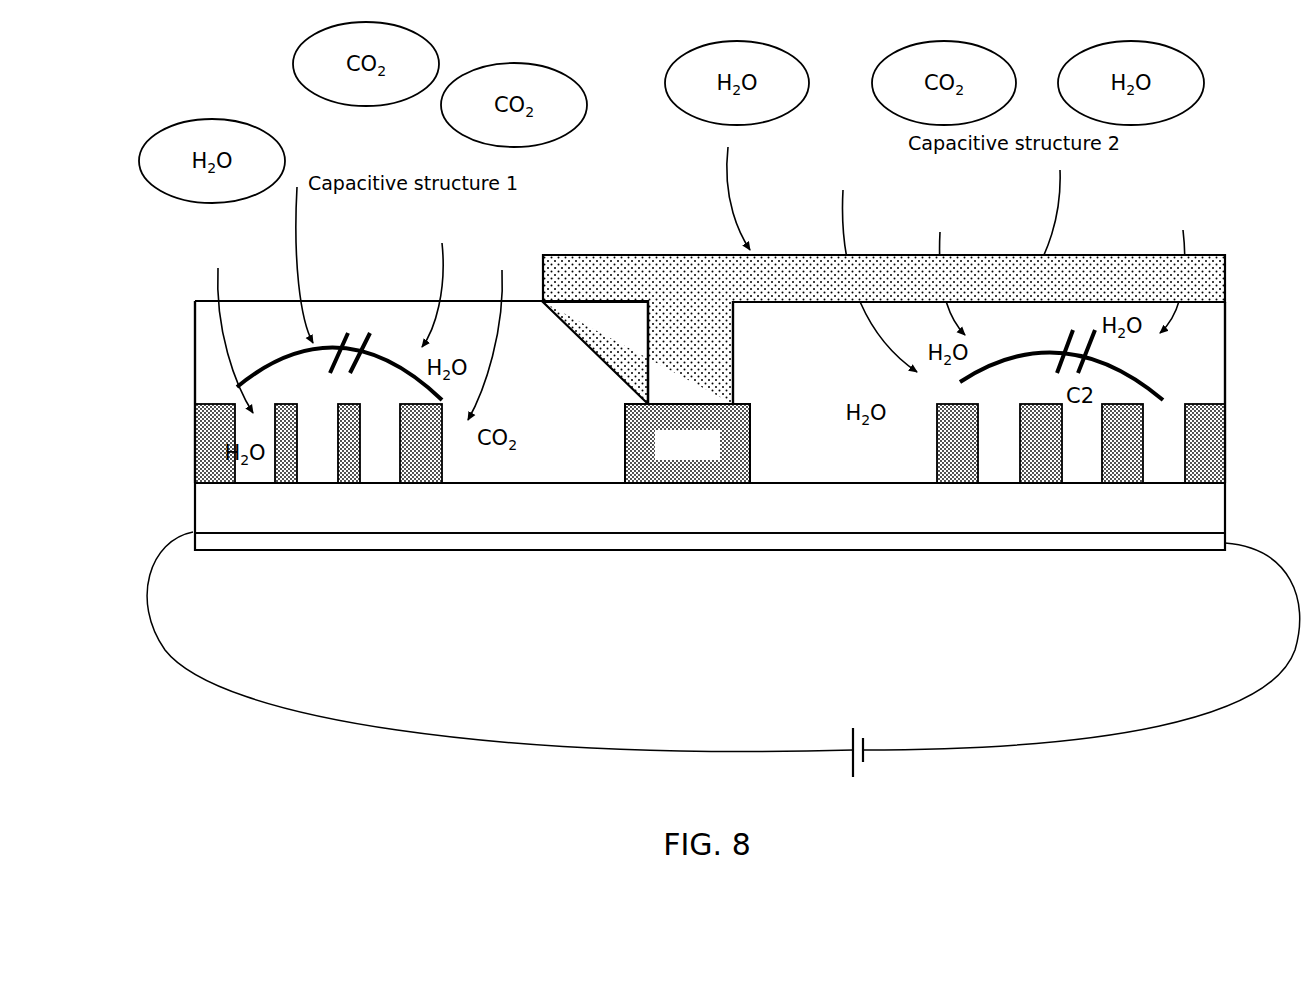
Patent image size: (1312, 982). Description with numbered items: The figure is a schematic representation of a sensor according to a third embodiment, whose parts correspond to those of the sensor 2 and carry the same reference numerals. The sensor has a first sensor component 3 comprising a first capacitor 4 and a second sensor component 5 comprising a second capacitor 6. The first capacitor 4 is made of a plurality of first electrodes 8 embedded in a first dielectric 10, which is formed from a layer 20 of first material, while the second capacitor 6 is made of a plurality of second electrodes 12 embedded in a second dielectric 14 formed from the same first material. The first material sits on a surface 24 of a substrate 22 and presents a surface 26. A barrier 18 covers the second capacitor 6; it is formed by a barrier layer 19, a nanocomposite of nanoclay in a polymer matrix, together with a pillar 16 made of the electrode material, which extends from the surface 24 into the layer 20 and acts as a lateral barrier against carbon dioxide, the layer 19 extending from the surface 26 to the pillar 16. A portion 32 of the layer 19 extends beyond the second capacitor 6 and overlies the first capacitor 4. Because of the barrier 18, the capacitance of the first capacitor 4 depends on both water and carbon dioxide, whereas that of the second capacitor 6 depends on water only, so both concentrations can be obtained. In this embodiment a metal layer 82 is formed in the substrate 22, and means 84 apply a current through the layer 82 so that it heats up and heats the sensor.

The sensor 2 is at (146, 324).
The first sensor component 3 is at (207, 370).
The first capacitor 4 is at (538, 383).
The second sensor component 5 is at (1225, 372).
The second capacitor 6 is at (793, 385).
The first electrodes 8 is at (287, 483).
The first dielectric 10 is at (548, 445).
The second electrodes 12 is at (1040, 483).
The second dielectric 14 is at (1172, 368).
The pillar 16 is at (645, 483).
The barrier 18 is at (797, 255).
The barrier layer 19 is at (903, 255).
The layer of first material 20 is at (780, 455).
The substrate 22 is at (207, 498).
The surface of substrate 24 is at (500, 478).
The surface of first material 26 is at (398, 322).
The portion of barrier layer 32 is at (578, 254).
The metal layer 82 is at (850, 542).
The means for applying a current 84 is at (877, 753).